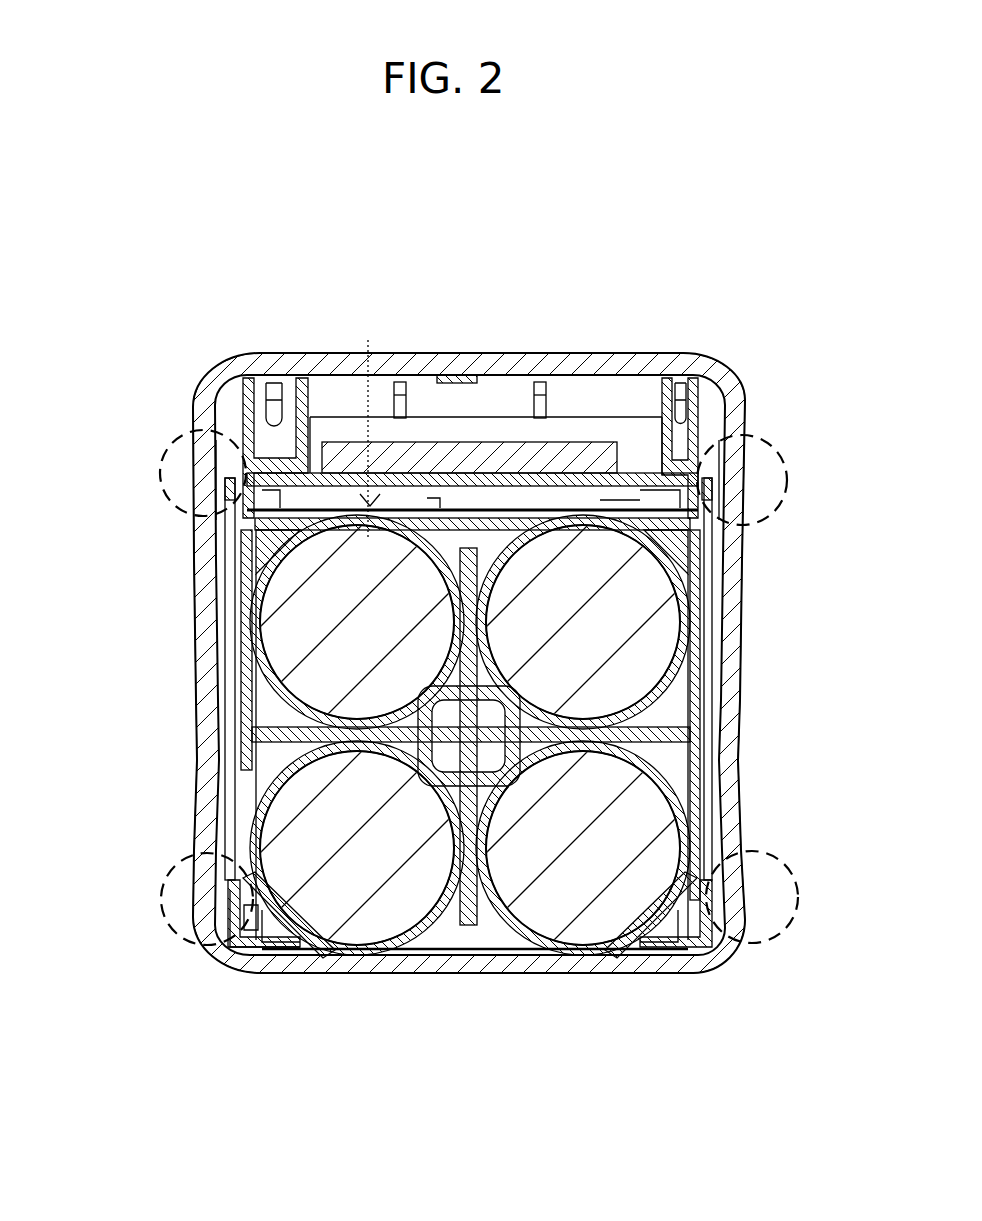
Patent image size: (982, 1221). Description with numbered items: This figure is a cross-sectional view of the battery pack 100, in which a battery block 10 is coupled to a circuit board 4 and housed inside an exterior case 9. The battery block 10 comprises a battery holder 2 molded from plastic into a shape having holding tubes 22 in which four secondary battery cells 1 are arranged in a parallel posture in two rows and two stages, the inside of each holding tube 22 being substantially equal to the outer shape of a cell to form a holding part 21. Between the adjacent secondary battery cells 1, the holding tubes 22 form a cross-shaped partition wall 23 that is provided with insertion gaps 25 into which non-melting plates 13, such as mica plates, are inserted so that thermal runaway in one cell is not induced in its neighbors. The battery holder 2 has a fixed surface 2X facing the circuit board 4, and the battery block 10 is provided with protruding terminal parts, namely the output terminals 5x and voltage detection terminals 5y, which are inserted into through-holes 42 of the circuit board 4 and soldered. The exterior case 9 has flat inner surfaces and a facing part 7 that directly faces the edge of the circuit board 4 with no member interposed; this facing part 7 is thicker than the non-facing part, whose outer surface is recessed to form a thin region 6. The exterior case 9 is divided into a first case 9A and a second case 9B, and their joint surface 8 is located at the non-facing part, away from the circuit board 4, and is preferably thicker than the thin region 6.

The battery pack 100 is at (708, 250).
The battery holder 2 is at (533, 258).
The holding tube 22 is at (430, 650).
The partition wall 23 is at (265, 647).
The fixed surface 2X is at (370, 420).
The voltage detection terminal 5y is at (270, 383).
The output terminal 5x is at (690, 400).
The circuit board 4 is at (545, 472).
The battery block 10 is at (565, 510).
The through-hole 42 is at (222, 428).
The facing part 7 is at (157, 475).
The holding part 21 is at (212, 529).
The exterior case 9 is at (64, 611).
The first case 9A is at (190, 592).
The second case 9B is at (235, 918).
The thin region 6 is at (175, 765).
The joint surface 8 is at (190, 882).
The non-melting plate 13 is at (690, 678).
The secondary battery cell 1 is at (548, 609).
The insertion gap 25 is at (580, 752).